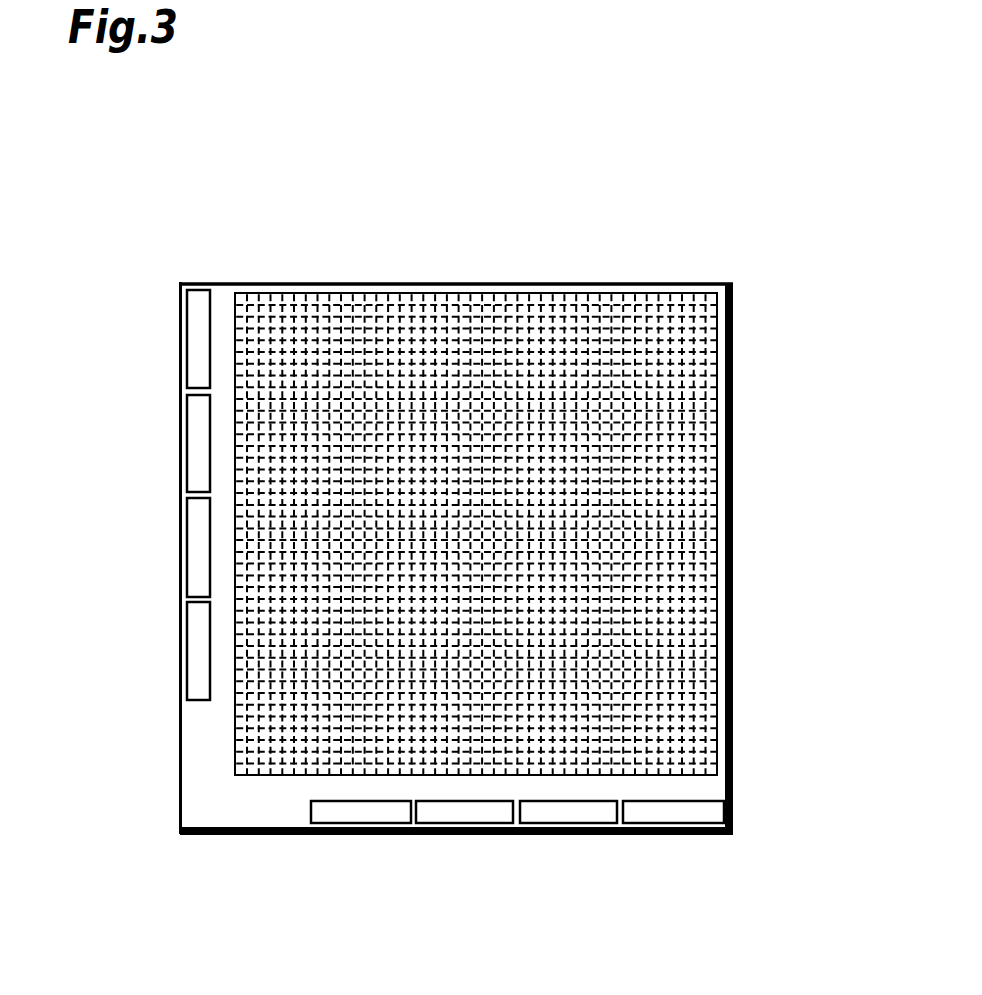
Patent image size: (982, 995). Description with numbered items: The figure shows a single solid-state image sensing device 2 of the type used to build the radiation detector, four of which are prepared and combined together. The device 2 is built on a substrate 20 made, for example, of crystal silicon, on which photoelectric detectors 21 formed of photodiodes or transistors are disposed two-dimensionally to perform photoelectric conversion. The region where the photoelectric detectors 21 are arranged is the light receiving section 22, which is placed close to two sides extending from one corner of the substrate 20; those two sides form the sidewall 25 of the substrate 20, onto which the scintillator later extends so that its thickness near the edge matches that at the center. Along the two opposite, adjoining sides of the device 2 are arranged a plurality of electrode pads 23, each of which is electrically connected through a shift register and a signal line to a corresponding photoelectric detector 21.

The solid-state image sensing device 2 is at (714, 252).
The substrate 20 is at (733, 782).
The photoelectric detector 21 is at (703, 517).
The light receiving section 22 is at (715, 688).
The electrode pad 23 is at (195, 658).
The sidewall 25 is at (518, 282).